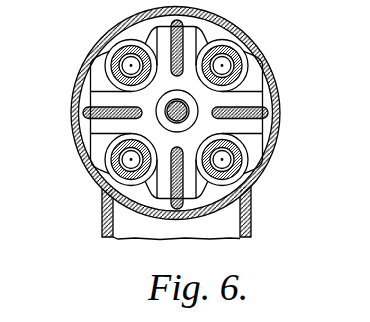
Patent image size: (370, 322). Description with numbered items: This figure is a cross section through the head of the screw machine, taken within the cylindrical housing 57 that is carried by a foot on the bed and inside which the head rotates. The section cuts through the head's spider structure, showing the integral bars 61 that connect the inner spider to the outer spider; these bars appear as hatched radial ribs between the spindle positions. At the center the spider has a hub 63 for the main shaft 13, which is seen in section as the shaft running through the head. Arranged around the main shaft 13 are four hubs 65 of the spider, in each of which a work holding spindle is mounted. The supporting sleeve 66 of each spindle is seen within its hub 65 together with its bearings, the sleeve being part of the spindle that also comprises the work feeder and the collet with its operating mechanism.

The main shaft 13 is at (186, 108).
The cylindrical housing 57 is at (272, 153).
The integral bars 61 is at (251, 101).
The hubs 63 is at (183, 88).
The hubs 65 is at (204, 146).
The supporting sleeve 66 is at (242, 170).